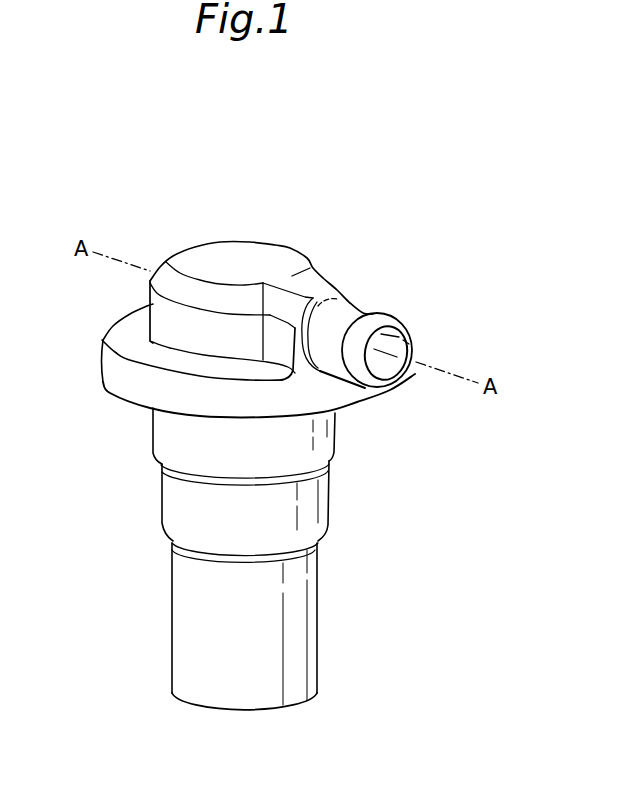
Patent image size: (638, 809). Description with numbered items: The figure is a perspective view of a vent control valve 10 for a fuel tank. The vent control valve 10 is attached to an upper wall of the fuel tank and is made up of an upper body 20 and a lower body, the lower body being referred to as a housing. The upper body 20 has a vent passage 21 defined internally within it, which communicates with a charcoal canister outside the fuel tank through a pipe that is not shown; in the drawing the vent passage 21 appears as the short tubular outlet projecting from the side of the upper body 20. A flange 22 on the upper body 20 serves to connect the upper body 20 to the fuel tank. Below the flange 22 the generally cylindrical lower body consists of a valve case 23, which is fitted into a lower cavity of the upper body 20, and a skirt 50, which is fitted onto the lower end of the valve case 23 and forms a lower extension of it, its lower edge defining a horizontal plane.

The vent control valve 10 is at (376, 240).
The upper body 20 is at (167, 278).
The vent passage 21 is at (353, 307).
The flange 22 is at (105, 370).
The valve case 23 is at (313, 498).
The skirt 50 is at (178, 658).